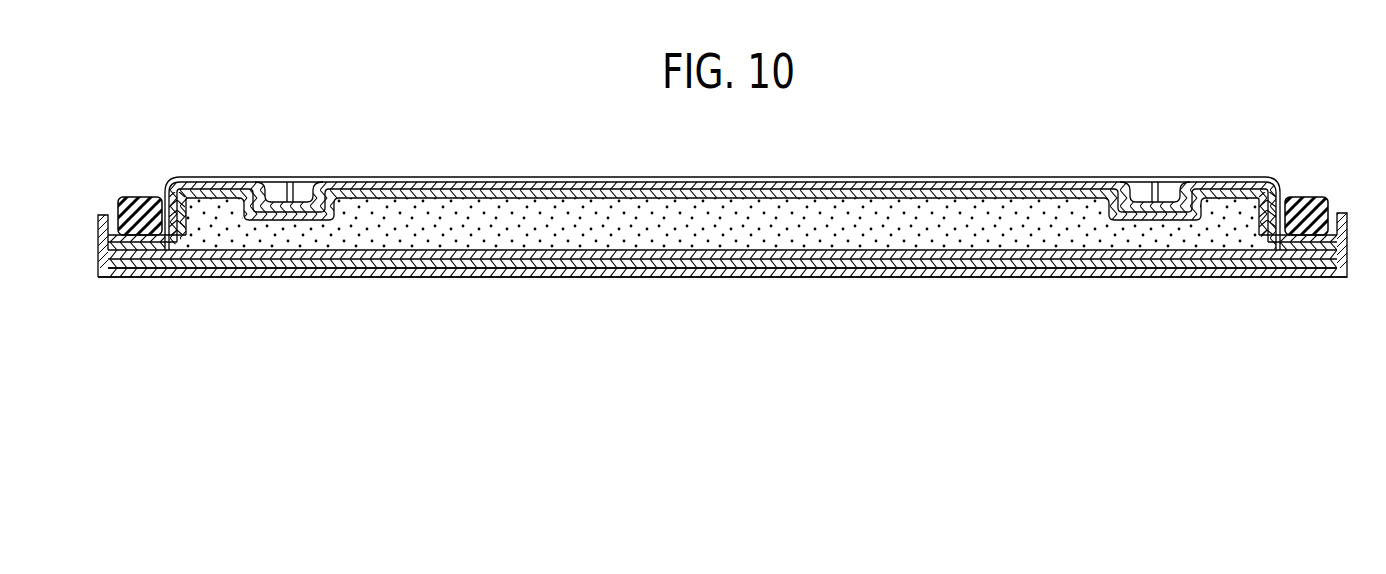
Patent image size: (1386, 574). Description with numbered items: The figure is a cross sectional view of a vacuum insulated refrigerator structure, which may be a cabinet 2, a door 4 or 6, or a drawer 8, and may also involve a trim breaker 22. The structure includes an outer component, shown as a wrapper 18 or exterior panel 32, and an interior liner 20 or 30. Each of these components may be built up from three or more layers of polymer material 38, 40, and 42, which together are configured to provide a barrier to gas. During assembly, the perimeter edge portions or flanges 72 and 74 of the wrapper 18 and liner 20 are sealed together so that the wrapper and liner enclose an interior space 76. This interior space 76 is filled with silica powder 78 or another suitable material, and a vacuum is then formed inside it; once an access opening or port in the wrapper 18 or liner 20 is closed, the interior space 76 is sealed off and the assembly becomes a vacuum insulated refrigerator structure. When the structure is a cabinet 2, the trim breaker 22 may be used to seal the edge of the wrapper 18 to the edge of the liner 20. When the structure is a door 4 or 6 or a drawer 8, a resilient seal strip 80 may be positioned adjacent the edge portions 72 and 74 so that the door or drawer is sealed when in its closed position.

The cabinet 2 is at (730, 221).
The door 4 is at (730, 221).
The door 6 is at (730, 221).
The drawer 8 is at (730, 221).
The trim breaker 22 is at (852, 160).
The interior liner 20 is at (722, 184).
The interior liner 30 is at (968, 177).
The wrapper 18 is at (722, 301).
The exterior panel 32 is at (668, 278).
The layer of polymer material 38 is at (478, 182).
The layer of polymer material 40 is at (440, 190).
The layer of polymer material 42 is at (395, 197).
The perimeter edge portion or flange 72 is at (113, 212).
The perimeter edge portion or flange 74 is at (125, 277).
The interior space 76 is at (198, 244).
The silica powder 78 is at (766, 240).
The resilient seal strip 80 is at (145, 197).